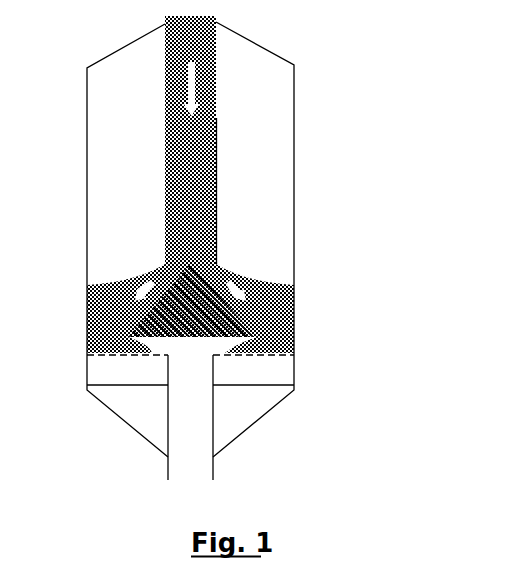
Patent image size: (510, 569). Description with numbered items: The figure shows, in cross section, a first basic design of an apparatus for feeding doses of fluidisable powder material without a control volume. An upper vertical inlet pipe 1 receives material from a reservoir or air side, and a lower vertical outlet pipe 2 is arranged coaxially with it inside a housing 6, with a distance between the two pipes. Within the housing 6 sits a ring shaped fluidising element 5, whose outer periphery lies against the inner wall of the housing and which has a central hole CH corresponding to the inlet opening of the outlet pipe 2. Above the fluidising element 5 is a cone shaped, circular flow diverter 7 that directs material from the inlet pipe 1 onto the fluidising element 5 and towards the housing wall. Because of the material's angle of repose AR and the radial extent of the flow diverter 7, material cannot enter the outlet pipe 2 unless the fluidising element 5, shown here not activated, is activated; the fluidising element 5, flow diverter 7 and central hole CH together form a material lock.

The inlet pipe 1 is at (218, 145).
The outlet pipe 2 is at (219, 463).
The fluidising element 5 is at (303, 368).
The housing 6 is at (303, 93).
The flow diverter 7 is at (256, 328).
The angle of repose AR is at (237, 346).
The central hole CH is at (203, 355).